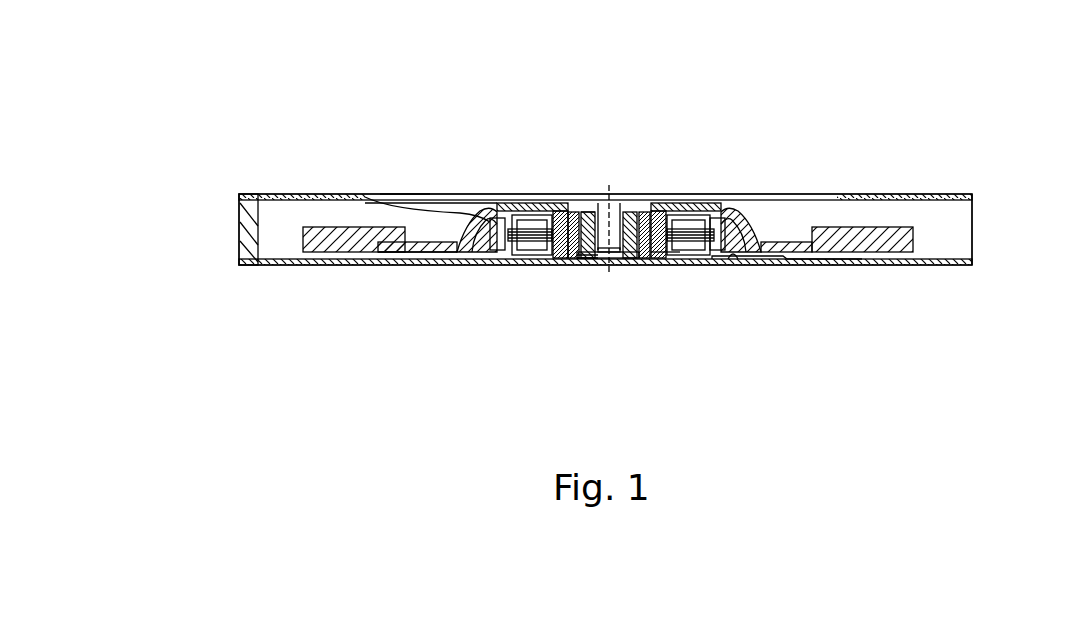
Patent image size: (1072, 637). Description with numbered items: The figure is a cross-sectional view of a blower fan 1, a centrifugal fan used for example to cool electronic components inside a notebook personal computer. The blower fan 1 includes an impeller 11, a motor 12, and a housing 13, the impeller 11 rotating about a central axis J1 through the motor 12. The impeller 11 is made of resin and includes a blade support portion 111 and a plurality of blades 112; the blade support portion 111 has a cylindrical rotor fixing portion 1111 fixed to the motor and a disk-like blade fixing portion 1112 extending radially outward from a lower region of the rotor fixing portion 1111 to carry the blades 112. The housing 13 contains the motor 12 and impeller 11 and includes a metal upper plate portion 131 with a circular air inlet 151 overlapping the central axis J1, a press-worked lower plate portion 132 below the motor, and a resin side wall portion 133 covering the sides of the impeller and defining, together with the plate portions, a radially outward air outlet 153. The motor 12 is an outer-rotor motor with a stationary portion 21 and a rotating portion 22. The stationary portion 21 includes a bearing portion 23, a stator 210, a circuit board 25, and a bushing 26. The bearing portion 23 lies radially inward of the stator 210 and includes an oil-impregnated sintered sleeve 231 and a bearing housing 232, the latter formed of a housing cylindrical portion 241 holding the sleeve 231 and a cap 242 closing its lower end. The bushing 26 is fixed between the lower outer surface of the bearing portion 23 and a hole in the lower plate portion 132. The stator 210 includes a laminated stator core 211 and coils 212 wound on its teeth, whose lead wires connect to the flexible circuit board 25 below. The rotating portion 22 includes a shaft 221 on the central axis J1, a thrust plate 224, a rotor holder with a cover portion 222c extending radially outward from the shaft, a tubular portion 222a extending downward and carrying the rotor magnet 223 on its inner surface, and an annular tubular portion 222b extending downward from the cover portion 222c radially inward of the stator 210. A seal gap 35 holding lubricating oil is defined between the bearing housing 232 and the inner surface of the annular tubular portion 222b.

The blower fan 1 is at (392, 106).
The impeller 11 is at (608, 332).
The blade support portion 111 is at (457, 367).
The rotor fixing portion 1111 is at (485, 252).
The blade fixing portion 1112 is at (397, 253).
The blades 112 is at (352, 240).
The motor 12 is at (587, 235).
The housing 13 is at (573, 206).
The upper plate portion 131 is at (284, 195).
The lower plate portion 132 is at (285, 264).
The side wall portion 133 is at (238, 233).
The air inlet 151 is at (447, 150).
The air outlet 153 is at (1033, 230).
The stationary portion 21 is at (718, 165).
The stator 210 is at (753, 150).
The stator core 211 is at (755, 225).
The coils 212 is at (700, 222).
The rotating portion 22 is at (563, 227).
The shaft 221 is at (627, 200).
The tubular portion 222a is at (490, 212).
The annular tubular portion 222b is at (673, 262).
The cover portion 222c is at (542, 210).
The rotor magnet 223 is at (365, 197).
The thrust plate 224 is at (633, 203).
The bearing portion 23 is at (622, 309).
The sleeve 231 is at (643, 263).
The bearing housing 232 is at (571, 308).
The housing cylindrical portion 241 is at (578, 260).
The cap 242 is at (618, 262).
The circuit board 25 is at (803, 266).
The bushing 26 is at (678, 262).
The seal gap 35 is at (540, 226).
The central axis J1 is at (590, 198).